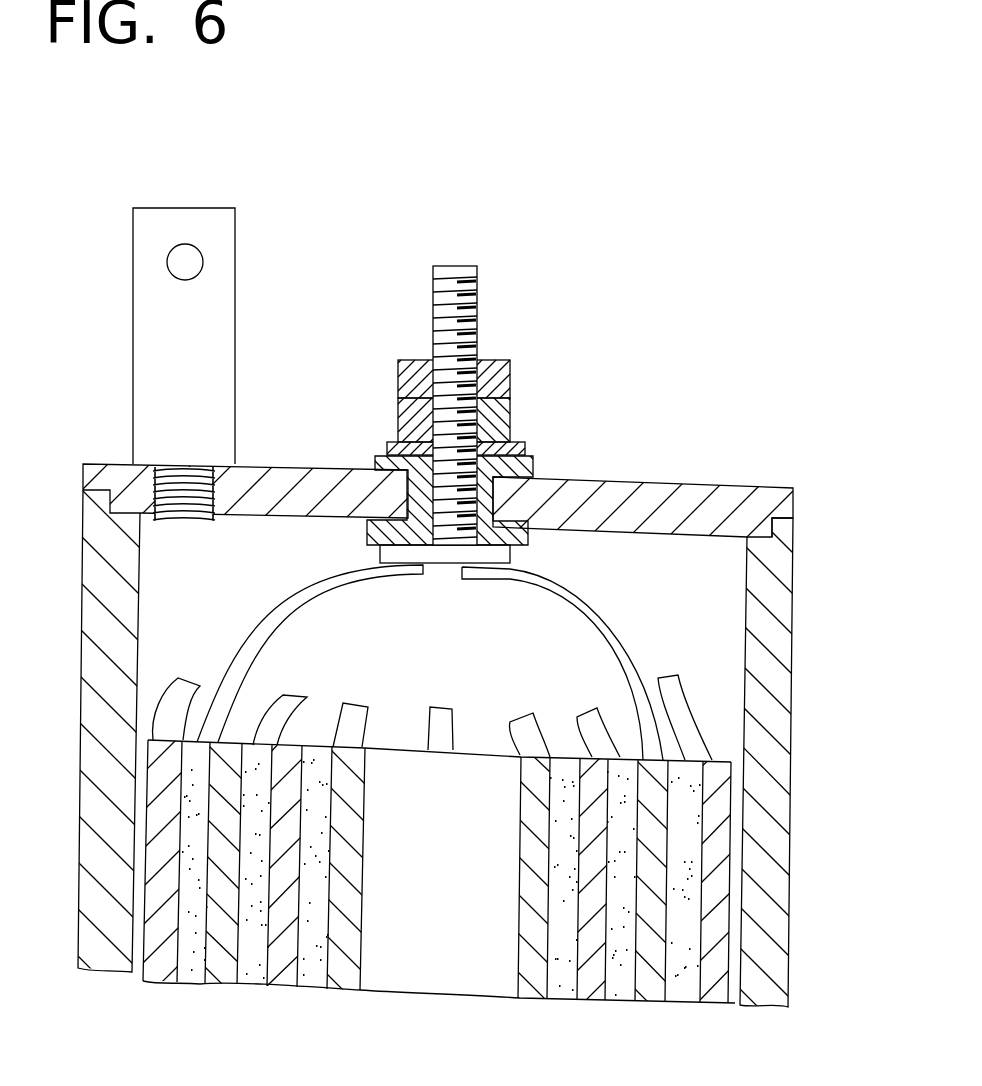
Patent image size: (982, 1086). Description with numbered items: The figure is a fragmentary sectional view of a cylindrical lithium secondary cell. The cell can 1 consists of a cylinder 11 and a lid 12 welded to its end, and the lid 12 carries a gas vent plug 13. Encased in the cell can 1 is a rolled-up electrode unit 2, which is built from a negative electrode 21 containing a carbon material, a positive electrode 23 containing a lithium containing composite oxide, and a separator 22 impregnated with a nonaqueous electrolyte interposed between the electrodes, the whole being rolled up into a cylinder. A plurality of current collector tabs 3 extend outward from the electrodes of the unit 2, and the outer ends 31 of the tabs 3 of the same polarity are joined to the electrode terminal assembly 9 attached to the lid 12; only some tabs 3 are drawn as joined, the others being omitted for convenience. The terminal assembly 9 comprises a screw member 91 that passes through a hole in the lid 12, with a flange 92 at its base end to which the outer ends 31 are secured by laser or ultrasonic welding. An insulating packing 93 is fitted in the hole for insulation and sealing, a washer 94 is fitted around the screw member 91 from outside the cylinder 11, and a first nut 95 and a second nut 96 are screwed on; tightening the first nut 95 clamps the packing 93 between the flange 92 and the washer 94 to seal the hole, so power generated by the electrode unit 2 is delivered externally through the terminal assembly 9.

The cell can 1 is at (683, 482).
The cylinder 11 is at (773, 765).
The lid 12 is at (747, 490).
The gas vent plug 13 is at (136, 373).
The rolled-up electrode unit 2 is at (434, 910).
The negative electrode 21 is at (160, 963).
The separator 22 is at (623, 983).
The positive electrode 23 is at (223, 972).
The current collector tab 3 is at (303, 588).
The outer end 31 is at (403, 582).
The electrode terminal assembly 9 is at (496, 365).
The screw member 91 is at (468, 284).
The flange 92 is at (498, 562).
The insulating packing 93 is at (533, 463).
The washer 94 is at (387, 442).
The first nut 95 is at (398, 406).
The second nut 96 is at (398, 359).